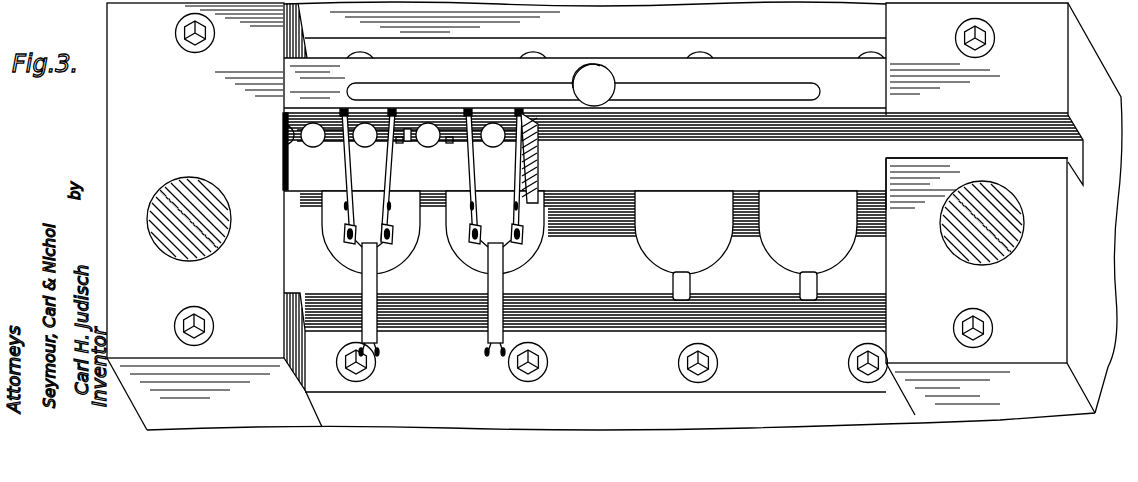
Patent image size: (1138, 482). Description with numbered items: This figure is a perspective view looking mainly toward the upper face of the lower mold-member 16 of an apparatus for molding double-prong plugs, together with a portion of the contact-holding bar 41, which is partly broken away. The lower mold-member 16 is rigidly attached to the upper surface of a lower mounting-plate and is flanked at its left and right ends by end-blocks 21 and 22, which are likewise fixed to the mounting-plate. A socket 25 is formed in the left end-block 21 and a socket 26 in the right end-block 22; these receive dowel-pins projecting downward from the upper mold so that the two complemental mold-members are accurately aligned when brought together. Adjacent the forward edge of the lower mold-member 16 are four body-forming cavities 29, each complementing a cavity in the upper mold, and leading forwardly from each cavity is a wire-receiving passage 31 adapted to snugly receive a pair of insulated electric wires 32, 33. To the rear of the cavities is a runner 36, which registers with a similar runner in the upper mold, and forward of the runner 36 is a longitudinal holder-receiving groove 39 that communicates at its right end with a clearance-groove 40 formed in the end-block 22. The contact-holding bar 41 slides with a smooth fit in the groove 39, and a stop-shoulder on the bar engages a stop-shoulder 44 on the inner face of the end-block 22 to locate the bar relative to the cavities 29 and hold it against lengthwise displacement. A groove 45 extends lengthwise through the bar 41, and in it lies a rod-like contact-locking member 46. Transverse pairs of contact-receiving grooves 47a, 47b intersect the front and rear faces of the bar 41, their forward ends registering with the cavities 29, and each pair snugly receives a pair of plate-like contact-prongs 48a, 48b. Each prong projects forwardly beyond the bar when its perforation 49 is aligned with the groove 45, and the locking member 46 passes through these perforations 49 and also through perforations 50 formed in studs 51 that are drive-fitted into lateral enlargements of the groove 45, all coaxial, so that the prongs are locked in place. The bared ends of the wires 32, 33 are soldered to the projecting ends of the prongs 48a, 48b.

The lower mold-member 16 is at (610, 200).
The end-block 21 is at (118, 101).
The end-block 22 is at (1057, 246).
The socket 25 is at (195, 178).
The socket 26 is at (985, 258).
The body-forming cavities 29 is at (340, 256).
The wire-receiving passage 31 is at (376, 281).
The insulated electric wire 32 is at (362, 281).
The insulated electric wire 33 is at (380, 288).
The runner 36 is at (520, 92).
The holder-receiving groove 39 is at (782, 158).
The clearance-groove 40 is at (1010, 148).
The contact-holding bar 41 is at (297, 158).
The stop-shoulder 44 is at (886, 170).
The groove 45 is at (448, 133).
The contact-locking member 46 is at (407, 128).
The contact-receiving groove 47a is at (342, 168).
The contact-receiving groove 47b is at (390, 168).
The contact-prong 48a is at (342, 216).
The contact-prong 48b is at (410, 212).
The perforation 49 is at (398, 144).
The perforation 50 is at (450, 143).
The stud 51 is at (292, 127).